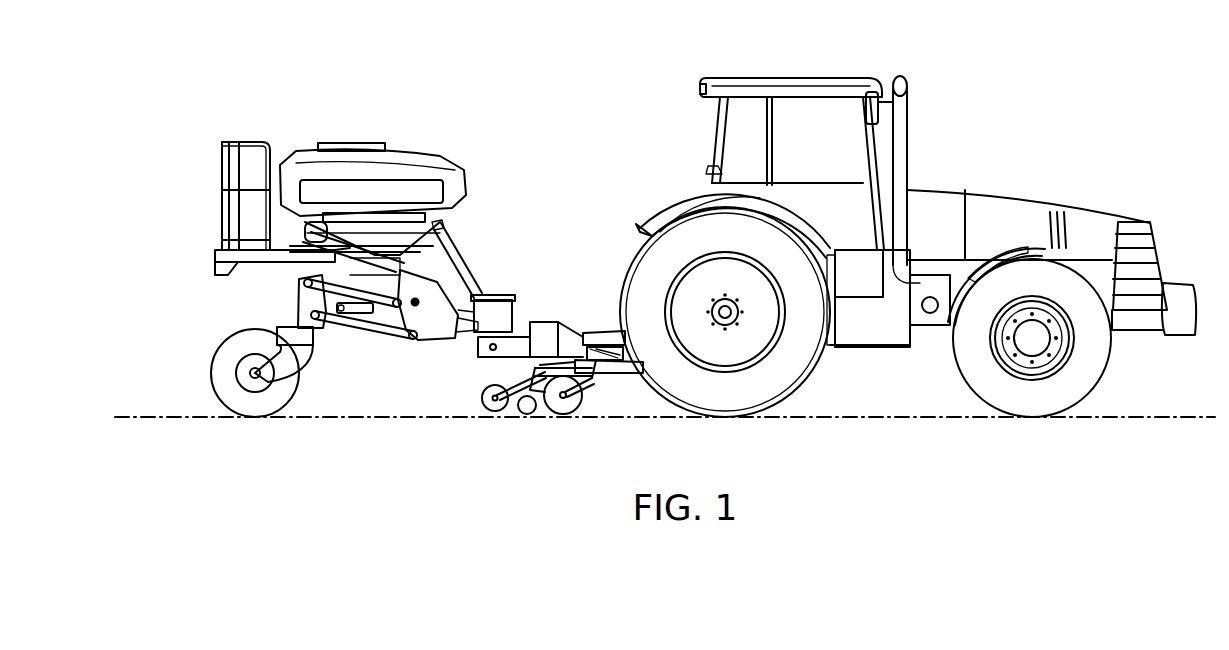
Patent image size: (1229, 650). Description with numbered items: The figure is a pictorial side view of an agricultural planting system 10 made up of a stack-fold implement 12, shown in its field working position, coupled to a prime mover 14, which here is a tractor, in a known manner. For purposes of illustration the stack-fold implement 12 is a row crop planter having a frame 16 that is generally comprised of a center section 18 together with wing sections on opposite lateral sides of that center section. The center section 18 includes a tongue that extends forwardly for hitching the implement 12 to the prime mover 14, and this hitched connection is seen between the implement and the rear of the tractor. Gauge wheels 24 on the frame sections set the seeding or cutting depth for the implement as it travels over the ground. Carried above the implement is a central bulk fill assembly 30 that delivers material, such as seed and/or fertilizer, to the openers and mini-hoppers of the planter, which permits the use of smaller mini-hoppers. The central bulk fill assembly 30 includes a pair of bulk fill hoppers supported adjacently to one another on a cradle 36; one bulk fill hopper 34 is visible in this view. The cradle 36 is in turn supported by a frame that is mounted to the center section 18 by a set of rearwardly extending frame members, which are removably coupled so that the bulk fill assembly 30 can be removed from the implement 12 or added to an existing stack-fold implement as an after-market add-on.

The planting system 10 is at (908, 230).
The stack-fold implement 12 is at (560, 333).
The prime mover 14 is at (925, 165).
The frame 16 is at (609, 372).
The center section 18 is at (604, 333).
The gauge wheels 24 is at (570, 405).
The central bulk fill assembly 30 is at (363, 232).
The bulk fill hopper 34 is at (393, 162).
The cradle 36 is at (340, 238).